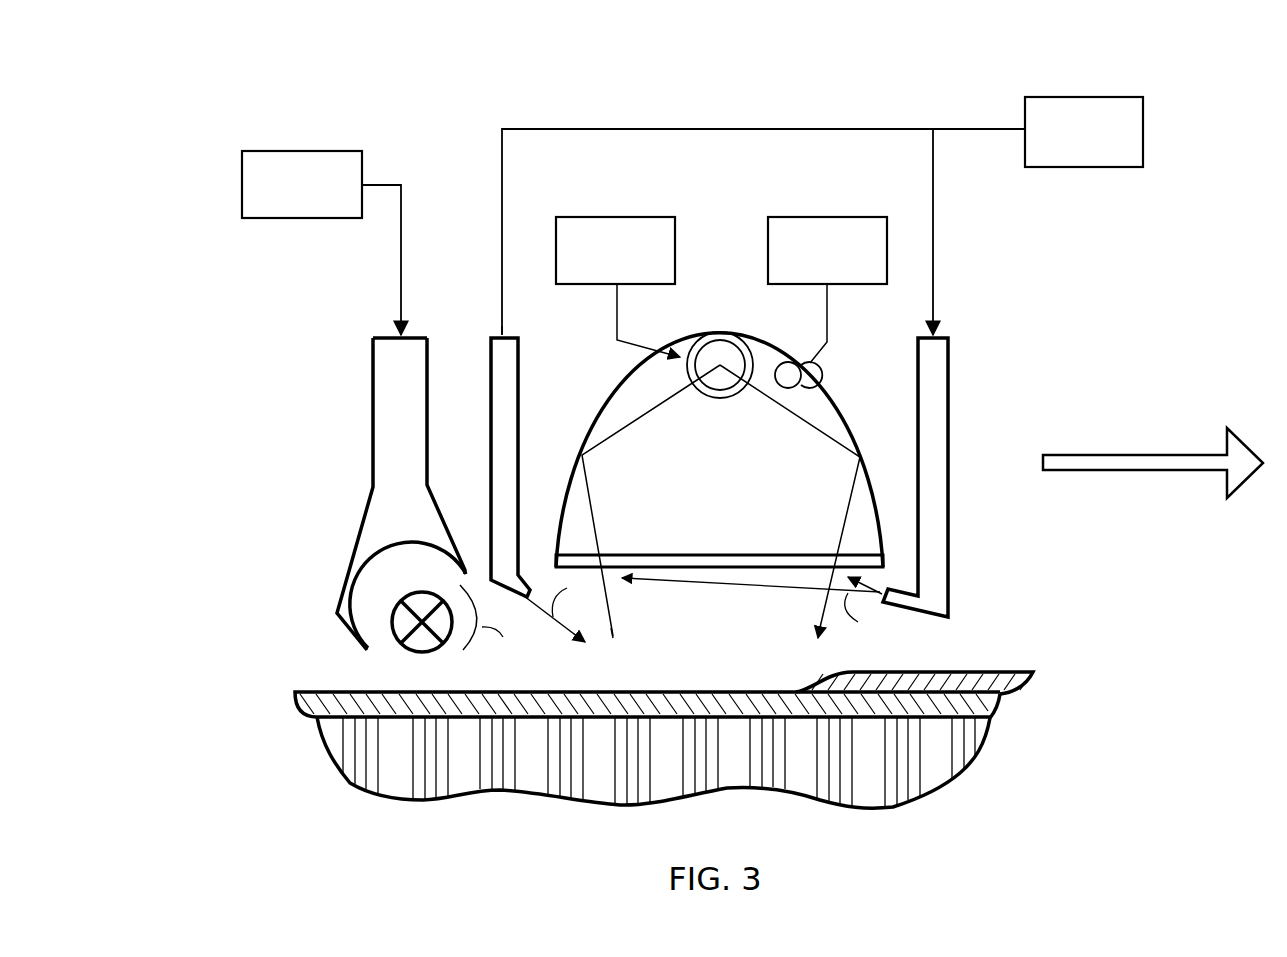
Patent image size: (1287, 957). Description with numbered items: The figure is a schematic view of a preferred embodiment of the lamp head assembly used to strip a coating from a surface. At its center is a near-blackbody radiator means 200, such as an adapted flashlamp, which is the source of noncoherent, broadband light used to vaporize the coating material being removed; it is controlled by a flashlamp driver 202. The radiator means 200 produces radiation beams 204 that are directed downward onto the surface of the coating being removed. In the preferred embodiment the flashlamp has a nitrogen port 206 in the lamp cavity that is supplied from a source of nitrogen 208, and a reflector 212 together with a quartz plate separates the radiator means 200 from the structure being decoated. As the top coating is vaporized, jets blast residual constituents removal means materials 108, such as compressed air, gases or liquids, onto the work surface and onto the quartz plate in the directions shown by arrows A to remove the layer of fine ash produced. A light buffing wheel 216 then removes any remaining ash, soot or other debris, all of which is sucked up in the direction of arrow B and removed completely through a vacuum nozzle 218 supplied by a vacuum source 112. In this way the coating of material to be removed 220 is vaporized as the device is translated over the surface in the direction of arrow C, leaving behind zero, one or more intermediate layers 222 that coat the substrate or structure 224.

The near-blackbody radiator means 200 is at (752, 417).
The residual constituents removal means materials 108 is at (822, 216).
The vacuum source 112 is at (321, 243).
The flashlamp driver 202 is at (654, 307).
The radiation beams 204 is at (802, 618).
The nitrogen port 206 is at (823, 380).
The source of nitrogen 208 is at (827, 290).
The reflector 212 is at (600, 395).
The light buffing wheel 216 is at (422, 652).
The vacuum nozzle 218 is at (401, 494).
The coating of material to be removed 220 is at (1028, 687).
The intermediate layers 222 is at (993, 718).
The substrate or structure 224 is at (973, 763).